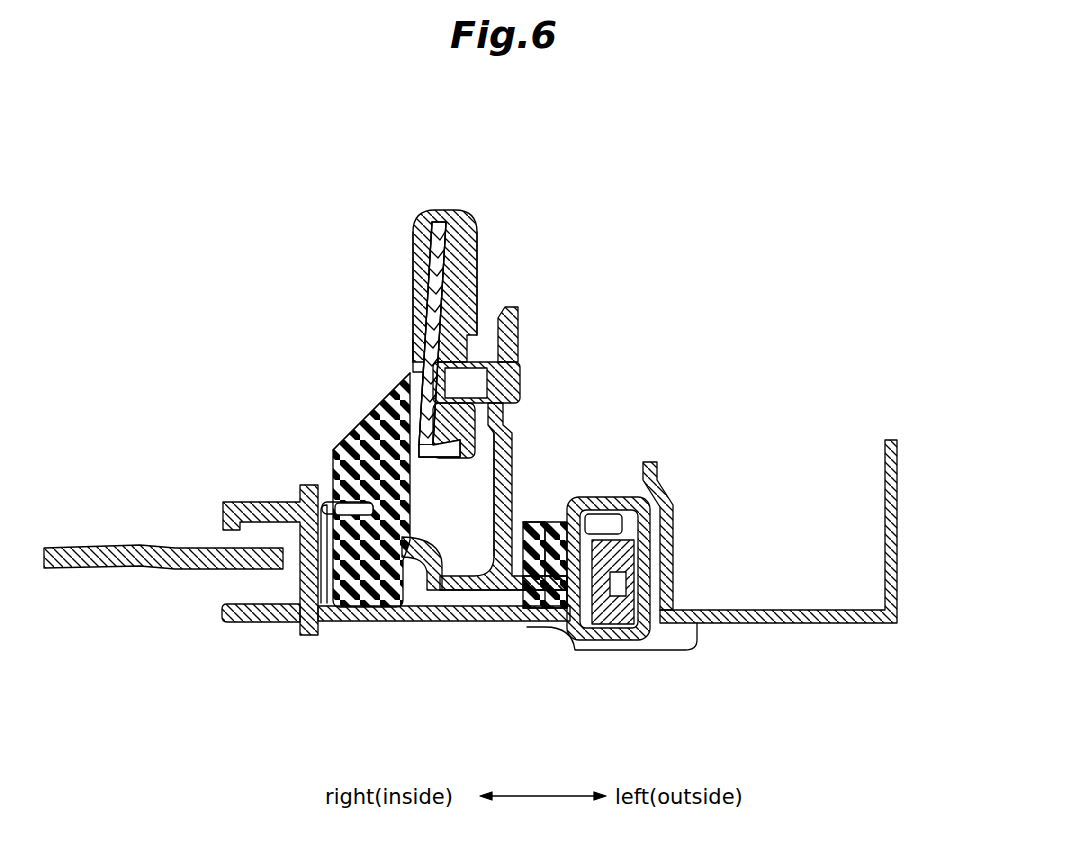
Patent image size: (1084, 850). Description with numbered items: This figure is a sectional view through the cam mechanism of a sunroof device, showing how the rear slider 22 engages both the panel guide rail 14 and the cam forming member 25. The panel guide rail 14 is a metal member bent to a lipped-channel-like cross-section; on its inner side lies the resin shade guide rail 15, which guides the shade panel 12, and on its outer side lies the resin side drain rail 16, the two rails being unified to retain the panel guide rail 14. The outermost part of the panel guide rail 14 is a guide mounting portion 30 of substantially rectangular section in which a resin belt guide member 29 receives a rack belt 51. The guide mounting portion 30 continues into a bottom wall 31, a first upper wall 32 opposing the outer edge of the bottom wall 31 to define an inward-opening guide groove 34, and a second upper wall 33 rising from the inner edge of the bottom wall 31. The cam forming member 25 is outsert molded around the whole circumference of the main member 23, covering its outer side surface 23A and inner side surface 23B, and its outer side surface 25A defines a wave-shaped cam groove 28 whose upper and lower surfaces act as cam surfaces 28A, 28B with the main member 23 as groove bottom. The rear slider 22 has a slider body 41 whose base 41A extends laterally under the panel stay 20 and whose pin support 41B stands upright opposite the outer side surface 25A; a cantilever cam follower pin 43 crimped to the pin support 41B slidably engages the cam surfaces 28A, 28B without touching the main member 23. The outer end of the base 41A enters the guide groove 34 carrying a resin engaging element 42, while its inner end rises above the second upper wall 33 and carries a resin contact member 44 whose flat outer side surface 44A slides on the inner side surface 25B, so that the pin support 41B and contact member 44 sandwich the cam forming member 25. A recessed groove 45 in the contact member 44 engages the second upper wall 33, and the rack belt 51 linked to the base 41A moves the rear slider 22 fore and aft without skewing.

The shade panel 12 is at (109, 550).
The panel guide rail 14 is at (458, 628).
The shade guide rail 15 is at (257, 624).
The side drain rail 16 is at (803, 531).
The panel stay 20 is at (435, 364).
The rear slider 22 is at (522, 433).
The main member 23 is at (430, 263).
The outer side surface 23A is at (444, 300).
The inner side surface 23B is at (417, 300).
The cam forming member 25 is at (468, 265).
The outer side surface 25A is at (475, 288).
The inner side surface 25B is at (412, 328).
The cam groove 28 is at (478, 383).
The cam surface 28A is at (500, 357).
The cam surface 28B is at (457, 445).
The belt guide member 29 is at (649, 603).
The guide mounting portion 30 is at (673, 525).
The bottom wall 31 is at (523, 620).
The first upper wall 32 is at (550, 521).
The second upper wall 33 is at (347, 478).
The guide groove 34 is at (521, 530).
The slider body 41 is at (437, 594).
The base 41A is at (488, 602).
The pin support 41B is at (505, 406).
The engaging element 42 is at (550, 602).
The cam follower pin 43 is at (411, 362).
The contact member 44 is at (377, 400).
The outer side surface 44A is at (440, 442).
The recessed groove 45 is at (303, 492).
The rack belt 51 is at (645, 543).